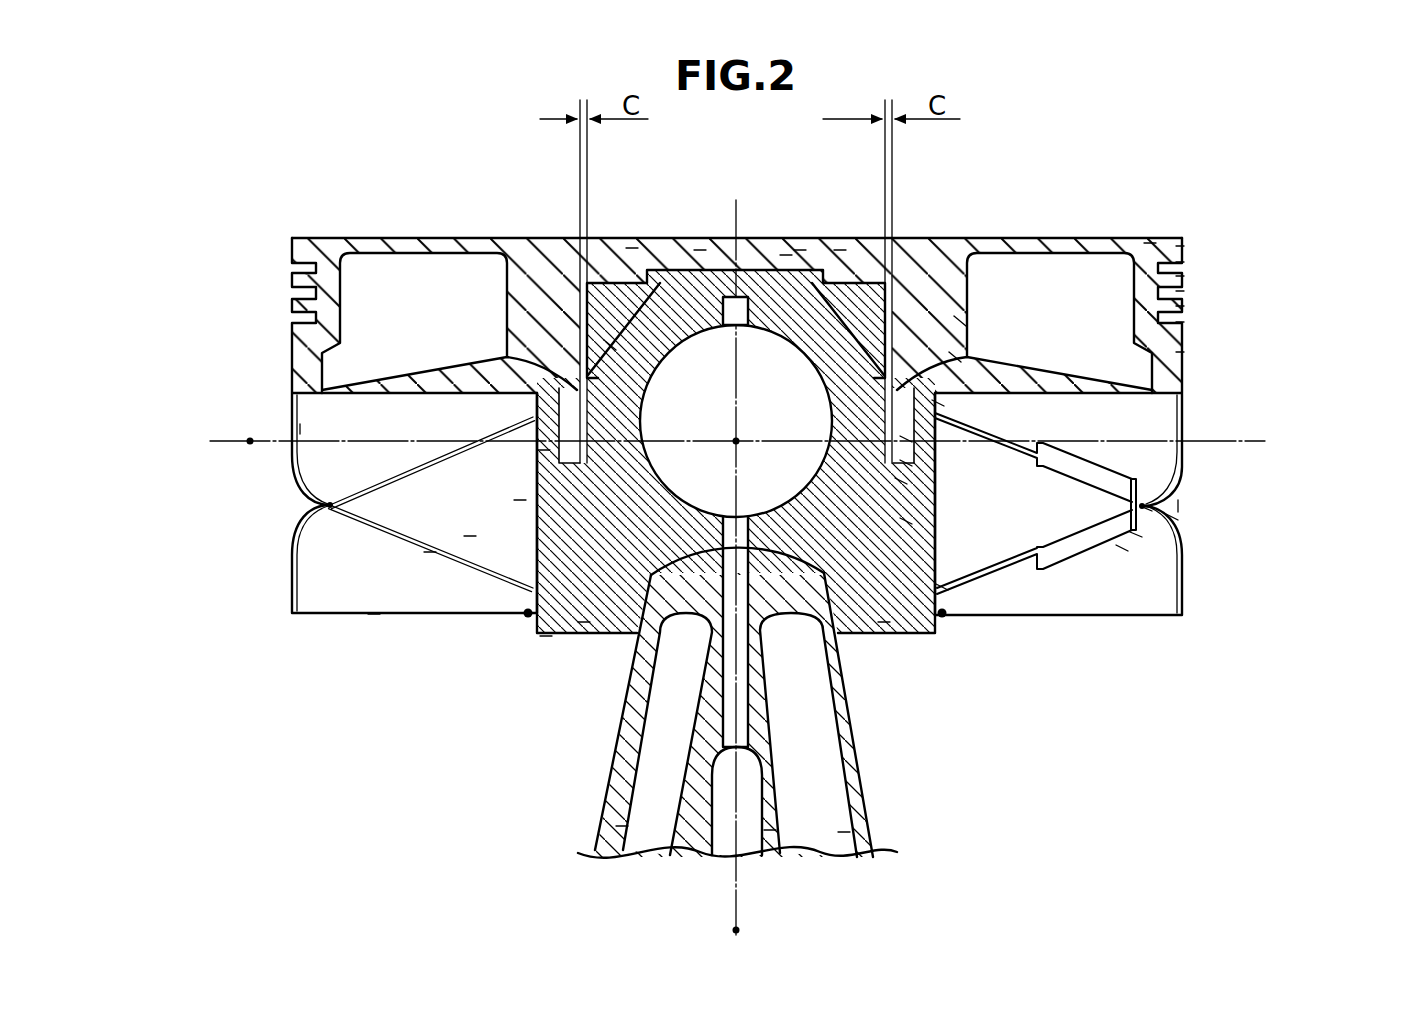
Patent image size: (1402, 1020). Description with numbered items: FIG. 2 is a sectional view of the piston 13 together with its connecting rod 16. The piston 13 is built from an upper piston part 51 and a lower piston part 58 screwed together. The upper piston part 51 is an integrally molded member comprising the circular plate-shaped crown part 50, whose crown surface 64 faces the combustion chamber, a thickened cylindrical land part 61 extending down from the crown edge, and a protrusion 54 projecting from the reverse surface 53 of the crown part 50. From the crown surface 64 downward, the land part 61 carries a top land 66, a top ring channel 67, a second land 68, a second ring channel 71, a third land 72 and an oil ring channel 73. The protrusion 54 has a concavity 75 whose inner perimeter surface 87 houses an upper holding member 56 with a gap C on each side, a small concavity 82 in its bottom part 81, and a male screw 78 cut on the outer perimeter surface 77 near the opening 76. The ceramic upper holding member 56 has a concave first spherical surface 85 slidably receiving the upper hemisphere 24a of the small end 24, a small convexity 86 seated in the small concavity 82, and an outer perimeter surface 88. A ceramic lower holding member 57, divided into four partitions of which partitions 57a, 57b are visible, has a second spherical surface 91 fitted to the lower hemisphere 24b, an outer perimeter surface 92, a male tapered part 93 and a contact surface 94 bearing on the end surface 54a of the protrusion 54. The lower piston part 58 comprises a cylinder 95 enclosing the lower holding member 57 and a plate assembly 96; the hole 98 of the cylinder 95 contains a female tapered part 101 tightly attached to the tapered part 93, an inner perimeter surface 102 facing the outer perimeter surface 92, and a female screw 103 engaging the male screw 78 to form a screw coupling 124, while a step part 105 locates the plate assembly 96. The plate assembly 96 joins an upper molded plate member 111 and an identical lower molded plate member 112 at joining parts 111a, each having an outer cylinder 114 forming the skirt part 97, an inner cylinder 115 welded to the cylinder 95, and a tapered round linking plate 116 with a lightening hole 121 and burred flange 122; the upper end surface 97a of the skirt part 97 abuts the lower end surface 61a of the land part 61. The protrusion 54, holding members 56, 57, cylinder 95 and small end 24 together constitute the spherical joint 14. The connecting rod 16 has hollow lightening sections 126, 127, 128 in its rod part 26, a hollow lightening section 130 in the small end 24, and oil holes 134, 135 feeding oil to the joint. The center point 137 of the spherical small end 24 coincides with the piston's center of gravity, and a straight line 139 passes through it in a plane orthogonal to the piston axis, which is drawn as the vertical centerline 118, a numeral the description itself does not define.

The piston 13 is at (348, 236).
The spherical joint 14 is at (612, 303).
The connecting rod 16 is at (590, 831).
The small end 24 is at (624, 640).
The upper hemisphere 24a is at (800, 250).
The lower hemisphere 24b is at (862, 640).
The rod part 26 is at (868, 790).
The crown part 50 is at (556, 252).
The upper piston part 51 is at (466, 236).
The reverse surface 53 is at (1040, 255).
The protrusion 54 is at (971, 295).
The end surface 54a is at (1136, 535).
The upper holding member 56 is at (700, 250).
The lower holding member 57 is at (556, 625).
The partition 57a is at (542, 456).
The partition 57b is at (905, 462).
The lower piston part 58 is at (300, 621).
The land part 61 is at (290, 245).
The lower end surface 61a is at (296, 407).
The crown surface 64 is at (1150, 245).
The top land 66 is at (1185, 248).
The top ring channel 67 is at (1185, 262).
The second land 68 is at (1185, 276).
The second ring channel 71 is at (1185, 291).
The third land 72 is at (1185, 306).
The oil ring channel 73 is at (1185, 322).
The concavity 75 is at (610, 345).
The opening 76 is at (521, 619).
The outer perimeter surface 77 is at (470, 540).
The screw 78 is at (430, 556).
The bottom part 81 is at (632, 250).
The small concavity 82 is at (760, 255).
The first spherical surface 85 is at (840, 250).
The small convexity 86 is at (786, 255).
The inner perimeter surface 87 is at (960, 322).
The outer perimeter surface 88 is at (955, 358).
The second spherical surface 91 is at (584, 625).
The outer perimeter surface 92 is at (905, 440).
The tapered part 93 is at (900, 480).
The contact surface 94 is at (1146, 509).
The cylinder 95 is at (905, 520).
The plate assembly 96 is at (520, 506).
The skirt part 97 is at (290, 599).
The upper end surface 97a is at (298, 380).
The hole 98 is at (306, 428).
The female tapered part 101 is at (932, 650).
The inner perimeter surface 102 is at (1122, 548).
The female screw 103 is at (1172, 516).
The step part 105 is at (545, 638).
The upper molded plate member 111 is at (1188, 418).
The joining parts 111a is at (333, 500).
The lower molded plate member 112 is at (1185, 506).
The outer cylinder 114 is at (1185, 445).
The inner cylinder 115 is at (938, 405).
The round linking plate 116 is at (418, 462).
The piston center axis 118 is at (730, 932).
The lightening hole 121 is at (1122, 470).
The flange 122 is at (1038, 440).
The screw coupling 124 is at (1185, 352).
The hollow lightening section 126 is at (622, 826).
The hollow lightening section 127 is at (770, 830).
The hollow lightening section 128 is at (843, 832).
The hollow lightening section 130 is at (648, 457).
The oil hole 134 is at (726, 772).
The oil hole 135 is at (727, 327).
The center point 137 is at (738, 440).
The straight line 139 is at (250, 441).